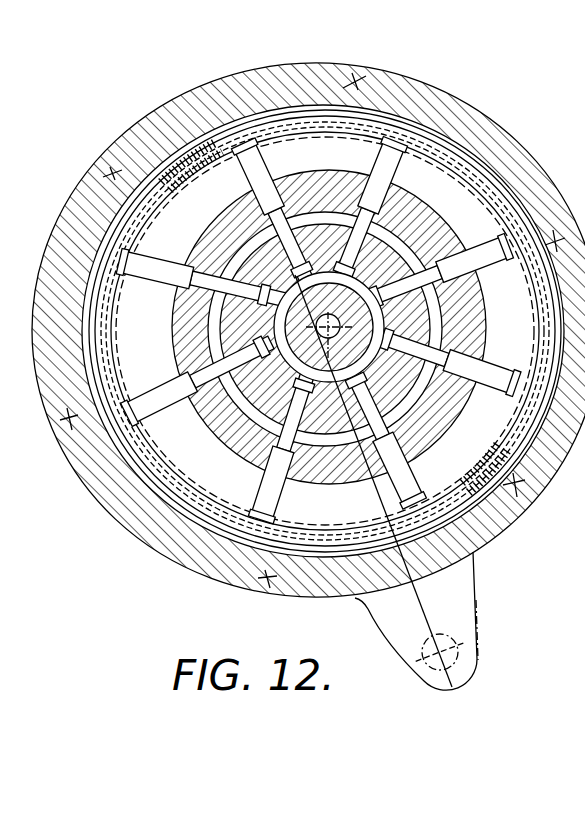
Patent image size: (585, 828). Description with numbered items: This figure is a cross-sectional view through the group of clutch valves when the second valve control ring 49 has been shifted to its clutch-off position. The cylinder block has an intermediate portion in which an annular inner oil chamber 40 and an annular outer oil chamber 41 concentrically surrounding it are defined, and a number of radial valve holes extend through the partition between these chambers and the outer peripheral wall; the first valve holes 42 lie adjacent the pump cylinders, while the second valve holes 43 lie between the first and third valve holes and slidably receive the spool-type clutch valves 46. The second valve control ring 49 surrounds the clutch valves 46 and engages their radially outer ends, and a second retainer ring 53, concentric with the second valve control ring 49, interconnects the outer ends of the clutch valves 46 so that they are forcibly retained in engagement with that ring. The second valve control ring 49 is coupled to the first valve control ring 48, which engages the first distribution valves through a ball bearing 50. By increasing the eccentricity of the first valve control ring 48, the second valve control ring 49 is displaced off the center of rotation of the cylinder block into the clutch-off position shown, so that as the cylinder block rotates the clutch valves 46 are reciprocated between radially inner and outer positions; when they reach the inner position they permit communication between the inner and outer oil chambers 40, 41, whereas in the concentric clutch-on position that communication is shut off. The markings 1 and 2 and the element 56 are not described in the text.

The first axis 1 is at (315, 339).
The second axis 2 is at (334, 346).
The annular inner oil chamber 40 is at (291, 279).
The annular outer oil chamber 41 is at (257, 240).
The first valve holes 42 is at (329, 307).
The second valve holes 43 is at (382, 186).
The clutch valves 46 is at (402, 185).
The first valve control ring 48 is at (477, 580).
The second valve control ring 49 is at (305, 77).
The ball bearing 50 is at (410, 130).
The second retainer ring 53 is at (470, 180).
The mounting bore 56 is at (480, 649).